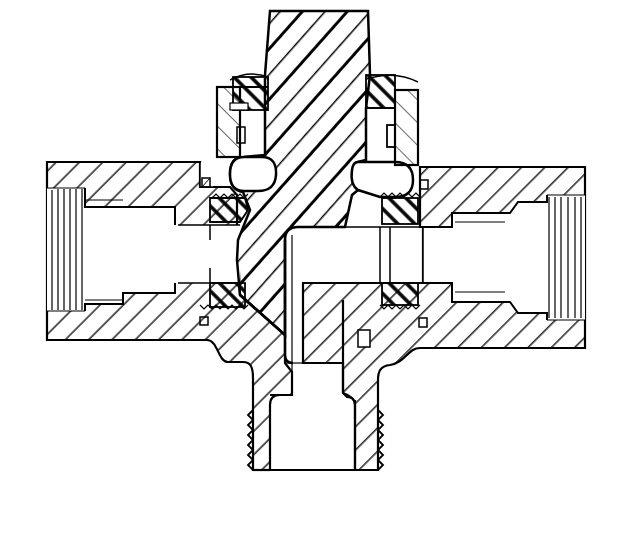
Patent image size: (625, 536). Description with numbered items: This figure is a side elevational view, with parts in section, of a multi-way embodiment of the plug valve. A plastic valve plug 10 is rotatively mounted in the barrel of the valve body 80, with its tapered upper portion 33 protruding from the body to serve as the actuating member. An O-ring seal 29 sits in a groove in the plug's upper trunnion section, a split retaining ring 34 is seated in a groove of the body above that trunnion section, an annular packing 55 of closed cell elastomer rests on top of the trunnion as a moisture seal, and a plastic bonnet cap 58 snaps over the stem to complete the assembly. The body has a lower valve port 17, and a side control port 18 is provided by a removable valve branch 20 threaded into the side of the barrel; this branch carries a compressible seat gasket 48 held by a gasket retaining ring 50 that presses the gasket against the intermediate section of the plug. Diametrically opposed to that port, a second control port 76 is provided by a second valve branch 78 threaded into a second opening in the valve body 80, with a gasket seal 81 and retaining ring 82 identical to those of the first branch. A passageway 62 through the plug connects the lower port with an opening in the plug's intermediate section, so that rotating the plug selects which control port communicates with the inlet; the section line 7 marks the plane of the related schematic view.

The valve plug 10 is at (263, 47).
The upper portion of the plug 33 is at (370, 30).
The annular packing 55 is at (248, 80).
The plastic bonnet cap 58 is at (395, 77).
The split retaining ring 34 is at (418, 100).
The O-ring seal 29 is at (395, 135).
The valve branch 20 is at (527, 167).
The valve branch 78 is at (135, 162).
The valve barrel 80 is at (217, 123).
The retaining ring 82 is at (200, 178).
The second control port 76 is at (227, 264).
The section line 7- 7 is at (152, 251).
The gasket retaining ring 50 is at (413, 227).
The compressible valve seat gasket 48 is at (392, 283).
The side port 18 is at (417, 274).
The passageway 62 is at (332, 276).
The gasket seal 81 is at (262, 290).
The lower valve port 17 is at (347, 383).